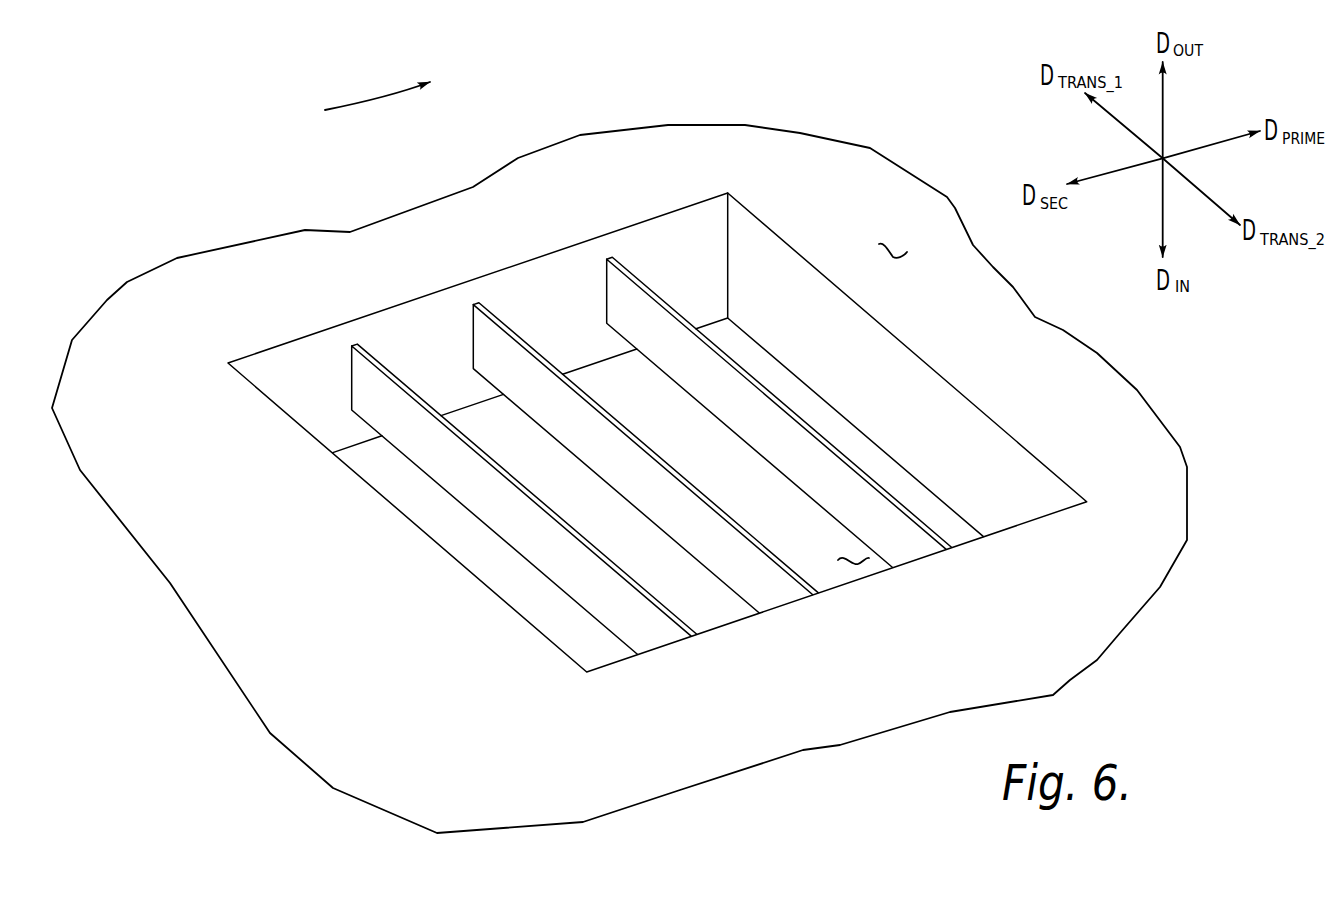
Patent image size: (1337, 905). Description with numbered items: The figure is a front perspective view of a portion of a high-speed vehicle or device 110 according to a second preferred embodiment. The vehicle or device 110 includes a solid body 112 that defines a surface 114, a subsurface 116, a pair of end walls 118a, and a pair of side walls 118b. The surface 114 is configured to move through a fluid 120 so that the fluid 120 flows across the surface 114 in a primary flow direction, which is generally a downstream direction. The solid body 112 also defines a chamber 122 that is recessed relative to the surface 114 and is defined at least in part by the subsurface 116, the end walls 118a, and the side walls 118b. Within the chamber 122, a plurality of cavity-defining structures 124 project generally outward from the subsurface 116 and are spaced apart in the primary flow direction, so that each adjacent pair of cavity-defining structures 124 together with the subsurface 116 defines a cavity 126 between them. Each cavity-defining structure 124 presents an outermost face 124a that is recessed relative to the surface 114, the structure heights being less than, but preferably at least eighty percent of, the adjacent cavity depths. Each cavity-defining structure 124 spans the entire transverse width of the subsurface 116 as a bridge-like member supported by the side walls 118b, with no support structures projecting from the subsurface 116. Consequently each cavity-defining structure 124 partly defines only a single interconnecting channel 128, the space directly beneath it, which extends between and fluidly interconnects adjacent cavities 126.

The vehicle or device 110 is at (647, 97).
The solid body 112 is at (807, 163).
The surface 114 is at (887, 247).
The subsurface 116 is at (860, 580).
The end walls 118a is at (955, 438).
The side walls 118b is at (540, 278).
The fluid 120 is at (356, 104).
The chamber 122 is at (641, 403).
The cavity-defining structures 124 is at (642, 618).
The outermost face 124a is at (613, 188).
The cavity 126 is at (557, 487).
The interconnecting channel 128 is at (398, 460).